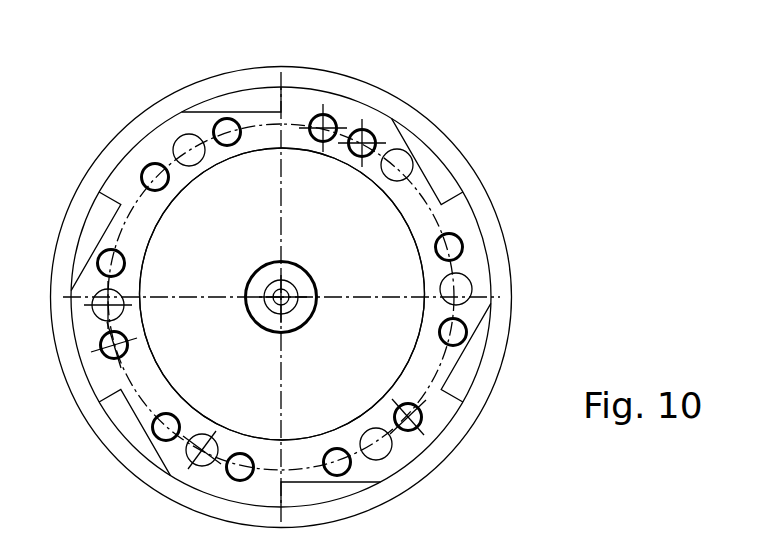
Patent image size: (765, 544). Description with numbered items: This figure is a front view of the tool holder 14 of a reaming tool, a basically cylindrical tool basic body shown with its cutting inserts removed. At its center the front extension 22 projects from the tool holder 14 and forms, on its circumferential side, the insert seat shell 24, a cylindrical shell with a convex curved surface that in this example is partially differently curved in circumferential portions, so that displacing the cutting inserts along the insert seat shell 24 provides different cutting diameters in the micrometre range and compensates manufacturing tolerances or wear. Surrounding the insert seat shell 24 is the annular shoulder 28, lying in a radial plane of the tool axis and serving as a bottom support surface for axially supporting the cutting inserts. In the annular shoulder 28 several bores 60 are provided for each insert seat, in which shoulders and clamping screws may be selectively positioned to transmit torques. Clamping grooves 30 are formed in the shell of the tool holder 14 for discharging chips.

The tool holder 14 is at (443, 128).
The front extension 22 is at (388, 220).
The insert seat shell 24 is at (413, 357).
The annular shoulder 28 is at (465, 225).
The clamping grooves 30 is at (280, 106).
The bores 60 is at (462, 247).